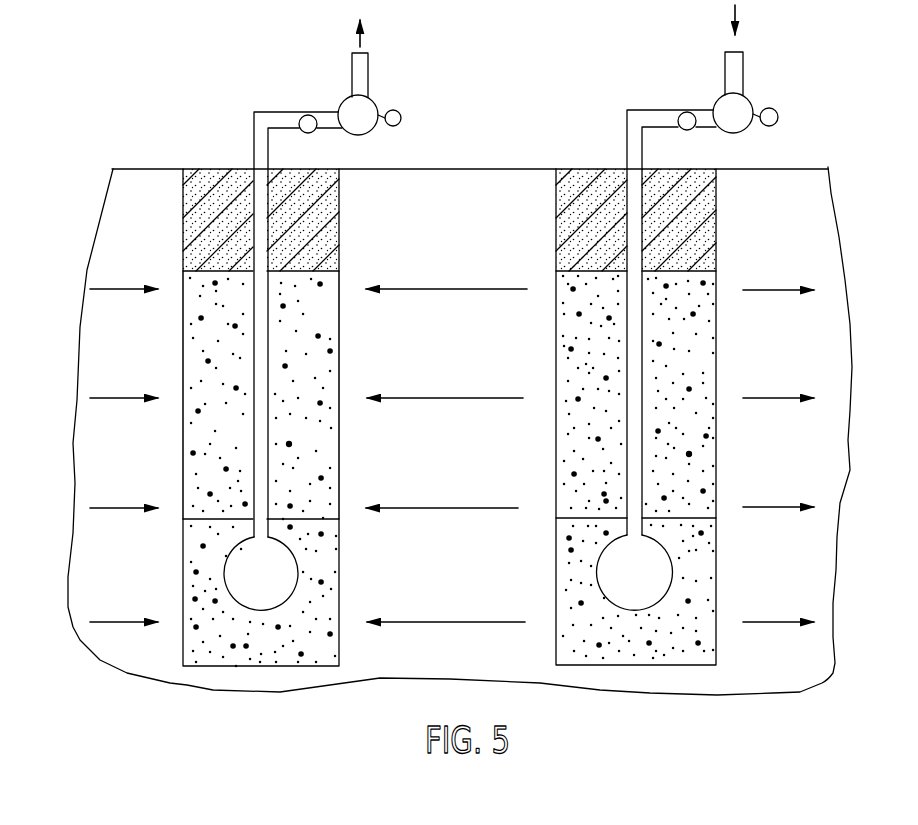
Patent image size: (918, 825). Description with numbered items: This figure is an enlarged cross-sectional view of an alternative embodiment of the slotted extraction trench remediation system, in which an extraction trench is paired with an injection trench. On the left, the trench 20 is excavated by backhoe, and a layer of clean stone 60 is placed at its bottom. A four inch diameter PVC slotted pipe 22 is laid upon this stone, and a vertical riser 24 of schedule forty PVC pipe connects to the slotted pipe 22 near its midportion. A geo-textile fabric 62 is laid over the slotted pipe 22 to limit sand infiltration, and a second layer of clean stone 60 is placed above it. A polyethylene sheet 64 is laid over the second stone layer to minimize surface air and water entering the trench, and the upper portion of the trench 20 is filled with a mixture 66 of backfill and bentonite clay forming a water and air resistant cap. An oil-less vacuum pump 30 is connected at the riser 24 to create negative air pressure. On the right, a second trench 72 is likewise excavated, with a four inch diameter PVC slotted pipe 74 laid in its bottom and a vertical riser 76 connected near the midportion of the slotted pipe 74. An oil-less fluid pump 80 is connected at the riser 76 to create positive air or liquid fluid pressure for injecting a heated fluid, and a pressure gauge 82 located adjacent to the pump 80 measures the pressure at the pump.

The trench 20 is at (293, 161).
The PVC slotted pipe 22 is at (297, 566).
The vertical riser 24 is at (254, 444).
The vacuum pump 30 is at (338, 98).
The clean stone 60 is at (291, 446).
The geo-textile fabric 62 is at (205, 521).
The polyethylene sheet 64 is at (205, 275).
The mixture of backfill and bentonite clay 66 is at (229, 169).
The second trench 72 is at (658, 159).
The PVC slotted pipe 74 is at (673, 567).
The vertical riser 76 is at (643, 414).
The fluid pump 80 is at (722, 96).
The pressure gauge 82 is at (766, 107).